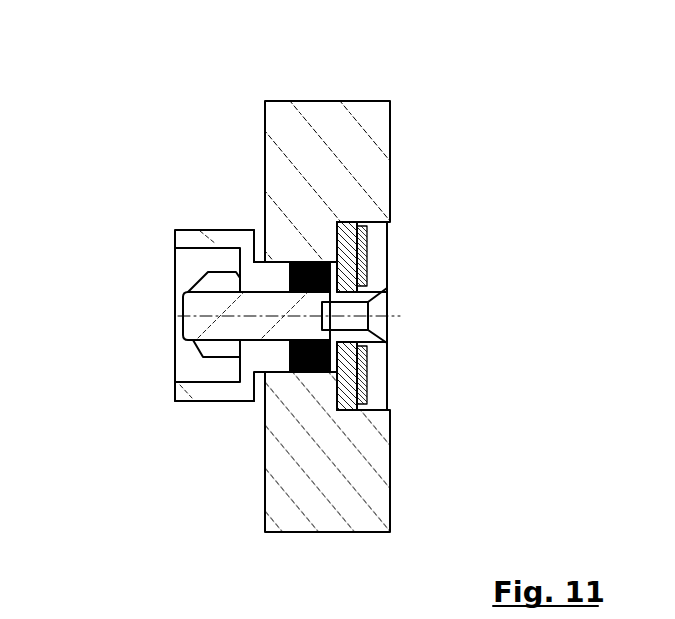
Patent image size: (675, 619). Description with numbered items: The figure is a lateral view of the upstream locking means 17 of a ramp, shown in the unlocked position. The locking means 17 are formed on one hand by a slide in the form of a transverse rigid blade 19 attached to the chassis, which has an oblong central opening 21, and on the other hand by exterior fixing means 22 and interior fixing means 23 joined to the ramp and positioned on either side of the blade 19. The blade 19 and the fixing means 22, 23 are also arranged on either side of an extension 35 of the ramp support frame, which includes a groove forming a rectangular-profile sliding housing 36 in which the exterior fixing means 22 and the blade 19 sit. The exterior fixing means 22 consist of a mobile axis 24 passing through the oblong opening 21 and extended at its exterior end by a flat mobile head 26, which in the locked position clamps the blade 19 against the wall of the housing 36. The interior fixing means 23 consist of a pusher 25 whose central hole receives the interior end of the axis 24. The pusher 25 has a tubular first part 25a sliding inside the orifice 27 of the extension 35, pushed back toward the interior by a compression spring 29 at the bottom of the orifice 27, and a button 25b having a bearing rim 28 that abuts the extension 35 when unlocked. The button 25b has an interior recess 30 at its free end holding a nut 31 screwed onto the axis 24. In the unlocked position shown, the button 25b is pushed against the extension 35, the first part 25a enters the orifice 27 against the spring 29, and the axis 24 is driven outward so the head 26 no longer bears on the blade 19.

The upstream locking means 17 is at (247, 102).
The upstream transverse rigid blade 19 is at (392, 224).
The oblong central opening 21 is at (390, 282).
The exterior fixing means 22 is at (390, 363).
The interior fixing means 23 is at (178, 231).
The mobile axis 24 is at (265, 341).
The pusher 25 is at (175, 400).
The tubular first part 25a is at (287, 262).
The button 25b is at (202, 403).
The flat mobile head 26 is at (392, 322).
The orifice 27 is at (305, 262).
The bearing rim 28 is at (257, 259).
The compression spring 29 is at (294, 372).
The interior recess 30 is at (188, 260).
The nut 31 is at (203, 357).
The extension 35 is at (395, 112).
The sliding housing 36 is at (392, 410).